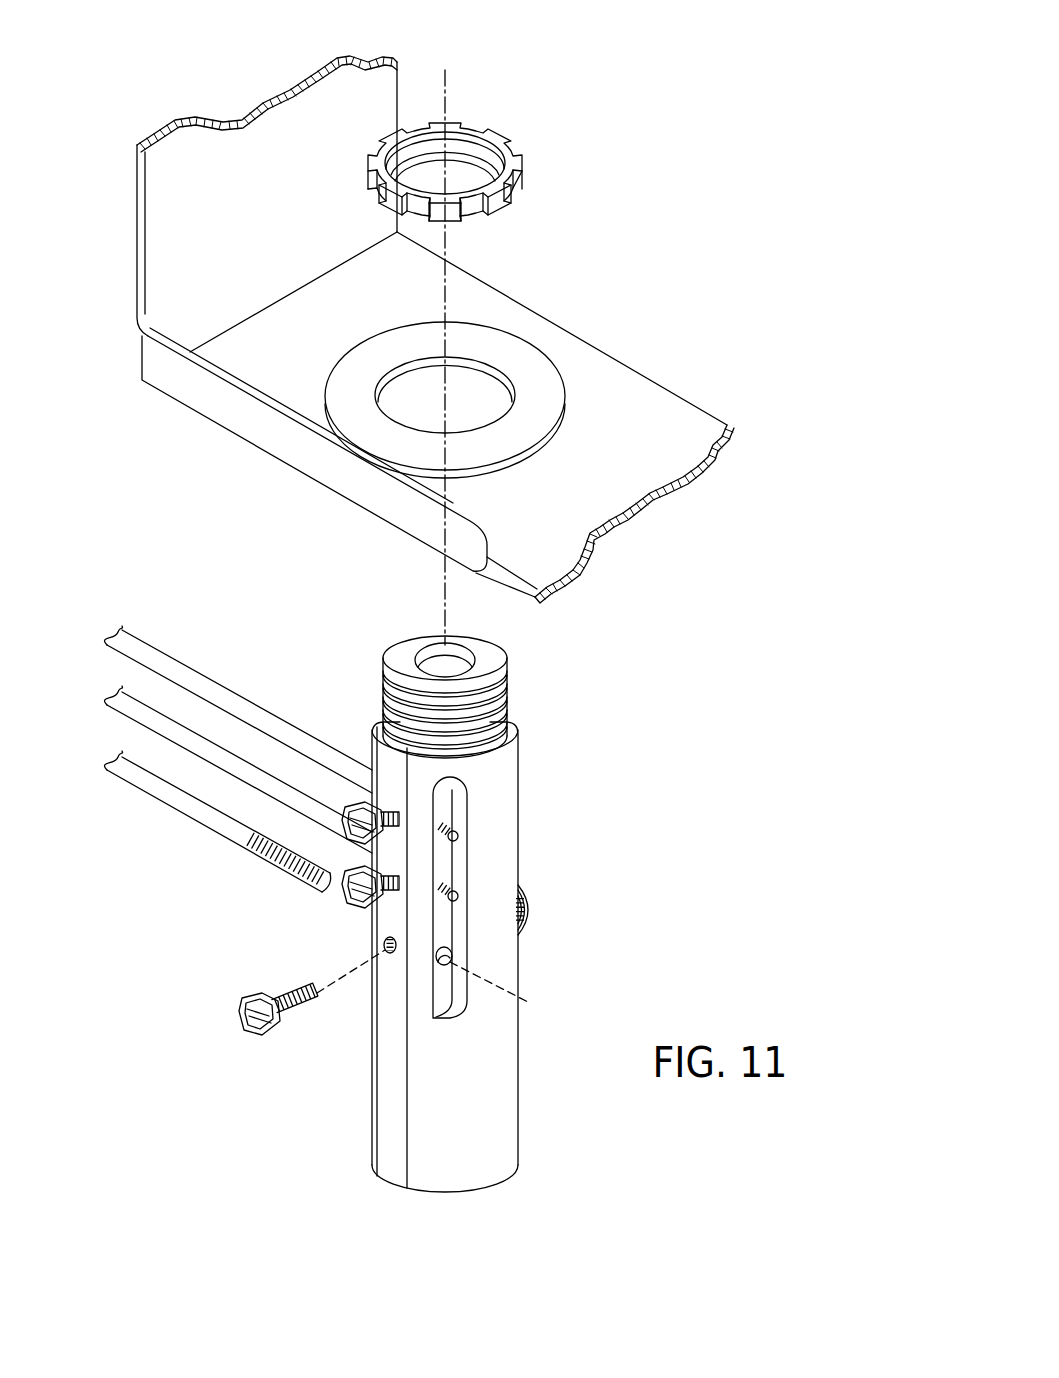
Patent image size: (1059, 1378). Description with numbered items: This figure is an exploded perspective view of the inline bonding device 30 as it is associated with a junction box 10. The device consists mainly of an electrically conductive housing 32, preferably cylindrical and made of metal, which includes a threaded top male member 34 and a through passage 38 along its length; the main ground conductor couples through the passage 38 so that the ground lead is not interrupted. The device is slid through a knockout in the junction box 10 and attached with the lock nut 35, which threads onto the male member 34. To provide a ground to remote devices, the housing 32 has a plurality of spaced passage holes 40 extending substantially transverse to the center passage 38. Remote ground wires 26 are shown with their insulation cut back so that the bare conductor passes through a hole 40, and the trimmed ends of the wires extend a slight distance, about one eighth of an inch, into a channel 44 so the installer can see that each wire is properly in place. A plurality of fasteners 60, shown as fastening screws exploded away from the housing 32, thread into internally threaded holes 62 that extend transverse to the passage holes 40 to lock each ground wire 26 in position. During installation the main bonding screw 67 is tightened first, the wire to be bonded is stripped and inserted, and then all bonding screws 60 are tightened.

The junction box 10 is at (305, 162).
The lock nut 35 is at (517, 160).
The ground wires 26 is at (237, 672).
The inline bonding device 30 is at (352, 1012).
The electrically conductive housing 32 is at (508, 828).
The threaded top male member 34 is at (505, 688).
The through passage 38 is at (462, 668).
The channel 44 is at (445, 925).
The passage holes 40 is at (440, 957).
The main bonding screw 67 is at (527, 906).
The internally threaded hole 62 is at (378, 948).
The fasteners 60 is at (340, 905).